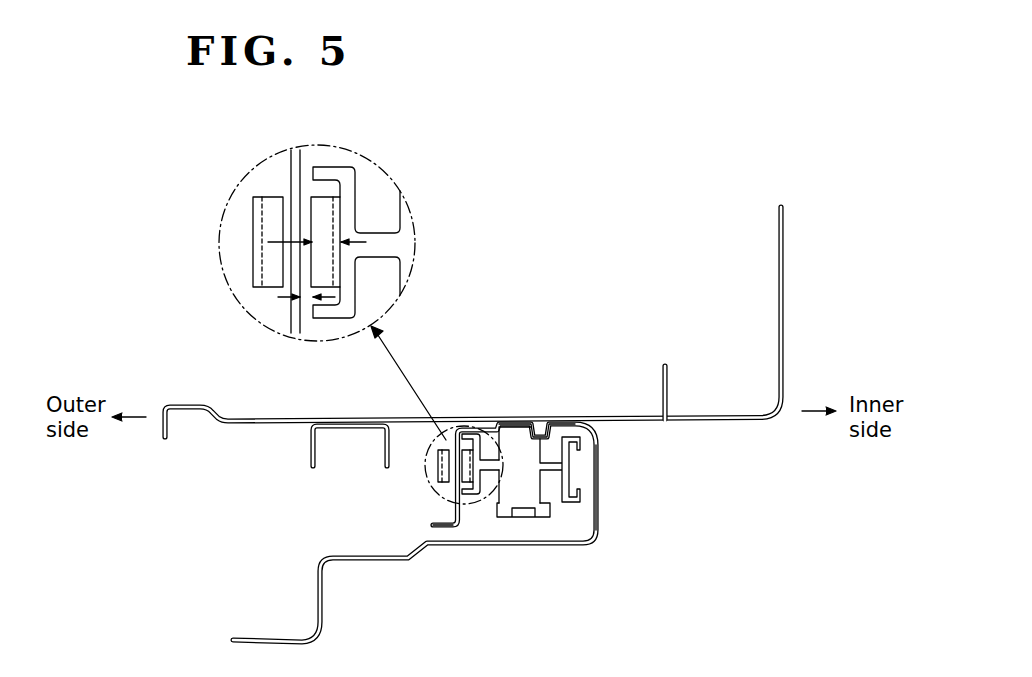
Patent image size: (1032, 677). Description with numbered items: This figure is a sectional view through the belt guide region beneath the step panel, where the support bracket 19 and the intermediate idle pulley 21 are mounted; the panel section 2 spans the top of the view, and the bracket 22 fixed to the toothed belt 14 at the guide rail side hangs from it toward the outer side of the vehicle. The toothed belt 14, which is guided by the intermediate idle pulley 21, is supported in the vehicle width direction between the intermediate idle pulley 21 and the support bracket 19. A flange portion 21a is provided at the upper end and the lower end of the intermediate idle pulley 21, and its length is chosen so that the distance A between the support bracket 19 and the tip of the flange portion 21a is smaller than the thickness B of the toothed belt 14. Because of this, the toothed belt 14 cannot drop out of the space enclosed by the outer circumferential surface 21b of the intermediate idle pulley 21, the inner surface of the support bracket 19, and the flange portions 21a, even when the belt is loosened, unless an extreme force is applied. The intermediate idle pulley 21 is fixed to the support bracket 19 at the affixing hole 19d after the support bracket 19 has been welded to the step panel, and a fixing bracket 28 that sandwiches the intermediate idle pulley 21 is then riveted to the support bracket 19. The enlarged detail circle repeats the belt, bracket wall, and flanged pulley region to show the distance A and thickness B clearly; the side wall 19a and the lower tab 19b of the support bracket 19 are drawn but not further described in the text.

The body panel 2 is at (258, 418).
The toothed belt 14 is at (438, 458).
The support bracket 19 is at (455, 500).
The bracket side wall 19a is at (604, 428).
The bracket bottom tab 19b is at (435, 524).
The affixing hole 19d is at (532, 424).
The intermediate idle pulley 21 is at (572, 454).
The flange portion 21a is at (460, 432).
The outer circumferential surface 21b is at (478, 452).
The bracket 22 is at (316, 458).
The fixing bracket 28 is at (542, 517).
The distance A is at (310, 300).
The thickness B is at (343, 244).